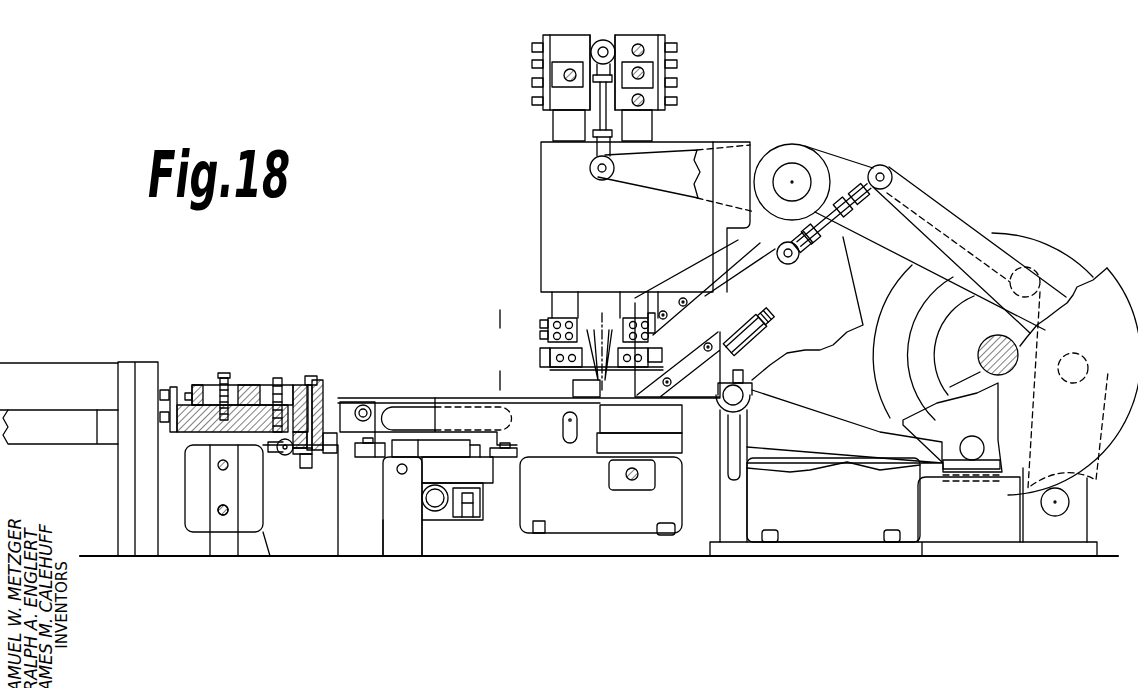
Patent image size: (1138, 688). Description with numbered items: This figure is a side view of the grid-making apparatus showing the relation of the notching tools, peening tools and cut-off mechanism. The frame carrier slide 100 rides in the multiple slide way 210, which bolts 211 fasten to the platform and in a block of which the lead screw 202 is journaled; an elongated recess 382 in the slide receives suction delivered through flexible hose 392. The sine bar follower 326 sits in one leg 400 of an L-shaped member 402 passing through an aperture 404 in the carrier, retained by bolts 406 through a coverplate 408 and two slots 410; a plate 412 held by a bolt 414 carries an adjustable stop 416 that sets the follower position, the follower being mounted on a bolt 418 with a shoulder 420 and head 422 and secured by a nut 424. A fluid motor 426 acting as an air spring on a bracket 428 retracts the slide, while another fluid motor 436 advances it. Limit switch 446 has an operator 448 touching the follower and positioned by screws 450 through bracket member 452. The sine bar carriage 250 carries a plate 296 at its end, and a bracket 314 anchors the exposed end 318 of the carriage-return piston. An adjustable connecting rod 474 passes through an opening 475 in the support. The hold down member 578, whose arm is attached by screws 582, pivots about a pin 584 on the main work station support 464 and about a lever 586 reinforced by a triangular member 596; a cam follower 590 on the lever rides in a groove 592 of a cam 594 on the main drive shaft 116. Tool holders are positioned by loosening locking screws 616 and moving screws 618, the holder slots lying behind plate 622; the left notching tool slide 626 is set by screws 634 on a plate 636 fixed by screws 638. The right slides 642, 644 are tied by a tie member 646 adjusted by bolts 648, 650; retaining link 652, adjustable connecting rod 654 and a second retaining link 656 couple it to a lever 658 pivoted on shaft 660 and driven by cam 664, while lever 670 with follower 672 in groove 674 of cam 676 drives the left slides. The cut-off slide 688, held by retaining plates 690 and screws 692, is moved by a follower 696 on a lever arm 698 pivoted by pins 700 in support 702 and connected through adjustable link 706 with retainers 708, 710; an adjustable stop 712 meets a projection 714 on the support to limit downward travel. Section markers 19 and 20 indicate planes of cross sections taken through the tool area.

The section line 19- 19 is at (499, 319).
The section line 20- 20 is at (580, 317).
The frame carrier slide 100 is at (196, 430).
The main drive shaft 116 is at (983, 353).
The lead screw 202 is at (434, 509).
The multiple slide way 210 is at (601, 507).
The bolts 211 is at (546, 521).
The sine bar carriage 250 is at (436, 449).
The plate 296 is at (457, 470).
The bracket 314 is at (400, 538).
The exposed end 318 is at (402, 475).
The sine bar follower 326 is at (320, 454).
The elongated recess 382 is at (405, 412).
The flexible hose 392 is at (562, 429).
The leg 400 is at (325, 391).
The L-shaped member 402 is at (324, 381).
The aperture 404 is at (288, 385).
The bolts 406 is at (240, 385).
The coverplate 408 is at (199, 385).
The slots 410 is at (230, 387).
The plate 412 is at (175, 388).
The bolt 414 is at (175, 418).
The adjustable stop 416 is at (165, 390).
The bolt 418 is at (312, 455).
The shoulder 420 is at (300, 455).
The head 422 is at (306, 469).
The nut 424 is at (317, 378).
The fluid motor 426 is at (59, 386).
The fluid motor 436 is at (60, 427).
The bracket 428 is at (143, 360).
The limit switch 446 is at (196, 528).
The operator 448 is at (283, 453).
The screws 450 is at (229, 512).
The bracket member 452 is at (219, 500).
The main work station support 464 is at (752, 501).
The adjustable connecting rod 474 is at (634, 481).
The opening 475 is at (612, 478).
The hold down member 578 is at (778, 366).
The screws 582 is at (744, 377).
The pin 584 is at (745, 395).
The lever 586 is at (957, 466).
The cam follower 590 is at (973, 462).
The groove 592 is at (932, 425).
The cam 594 is at (952, 427).
The reinforcing member 596 is at (810, 409).
The locking screws 616 is at (586, 361).
The screws 618 is at (540, 356).
The plate 622 is at (558, 362).
The slide 626 is at (550, 316).
The screws 634 is at (548, 324).
The plate 636 is at (541, 334).
The screws 638 is at (568, 318).
The slide 642 is at (552, 127).
The slide 644 is at (656, 127).
The tie member 646 is at (619, 40).
The bolts 648 is at (569, 69).
The bolts 650 is at (679, 67).
The retaining link 652 is at (604, 40).
The adjustable connecting rod 654 is at (596, 141).
The second retaining link 656 is at (598, 179).
The lever 658 is at (655, 191).
The shaft 660 is at (798, 176).
The cam 664 is at (1073, 381).
The lever 670 is at (758, 148).
The follower 672 is at (1028, 270).
The groove 674 is at (923, 342).
The cam 676 is at (993, 236).
The slide 688 is at (753, 301).
The retaining plates 690 is at (668, 316).
The screws 692 is at (684, 304).
The follower 696 is at (1077, 352).
The lever arm 698 is at (1096, 420).
The pins 700 is at (1069, 500).
The support 702 is at (1087, 528).
The adjustable link 706 is at (830, 216).
The retainer 708 is at (876, 167).
The retainer 710 is at (800, 255).
The adjustable stop 712 is at (766, 332).
The projection 714 is at (741, 343).